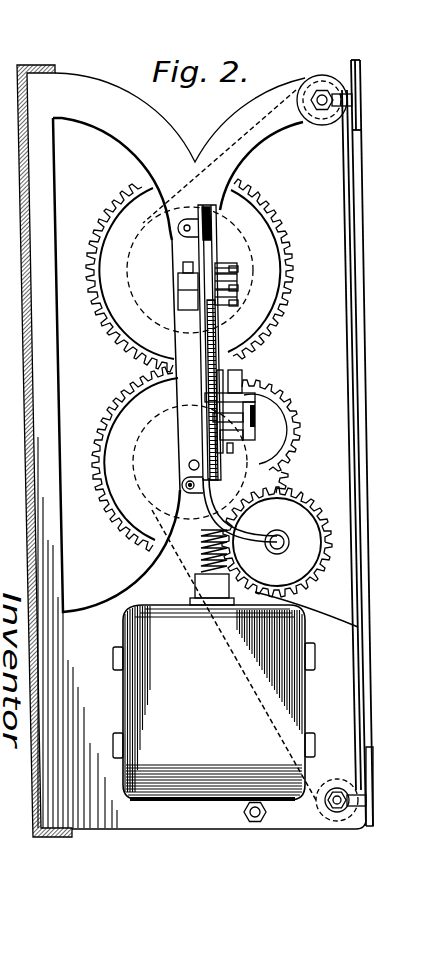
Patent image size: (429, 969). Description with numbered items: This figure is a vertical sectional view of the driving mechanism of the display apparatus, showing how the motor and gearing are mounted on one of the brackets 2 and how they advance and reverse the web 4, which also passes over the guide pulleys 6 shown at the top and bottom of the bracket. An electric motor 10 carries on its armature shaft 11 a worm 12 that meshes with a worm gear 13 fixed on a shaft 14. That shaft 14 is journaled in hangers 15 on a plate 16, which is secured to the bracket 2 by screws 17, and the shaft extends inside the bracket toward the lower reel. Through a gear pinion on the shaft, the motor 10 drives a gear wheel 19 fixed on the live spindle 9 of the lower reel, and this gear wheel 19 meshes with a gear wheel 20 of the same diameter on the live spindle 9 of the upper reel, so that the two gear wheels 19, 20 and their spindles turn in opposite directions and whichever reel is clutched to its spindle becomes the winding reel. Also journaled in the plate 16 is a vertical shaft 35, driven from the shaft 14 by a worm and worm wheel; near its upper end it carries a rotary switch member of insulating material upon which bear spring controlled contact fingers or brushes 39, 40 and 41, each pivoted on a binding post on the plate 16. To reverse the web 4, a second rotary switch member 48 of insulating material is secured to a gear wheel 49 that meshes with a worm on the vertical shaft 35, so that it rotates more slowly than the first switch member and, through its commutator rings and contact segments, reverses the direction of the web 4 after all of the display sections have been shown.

The bracket 2 is at (337, 730).
The web 4 is at (343, 372).
The pulley 6 is at (318, 118).
The live spindle 9 is at (189, 465).
The electric motor 10 is at (285, 693).
The armature shaft 11 is at (185, 606).
The worm 12 is at (195, 553).
The worm gear 13 is at (302, 520).
The shaft 14 is at (290, 542).
The hanger 15 is at (250, 534).
The plate 16 is at (142, 335).
The screw 17 is at (178, 228).
The gear wheel 19 is at (298, 429).
The gear wheel 20 is at (268, 246).
The vertical shaft 35 is at (218, 335).
The contact finger 39 is at (238, 268).
The contact finger 40 is at (238, 289).
The contact finger 41 is at (238, 305).
The rotary switch member 48 is at (256, 396).
The gear wheel 49 is at (243, 372).